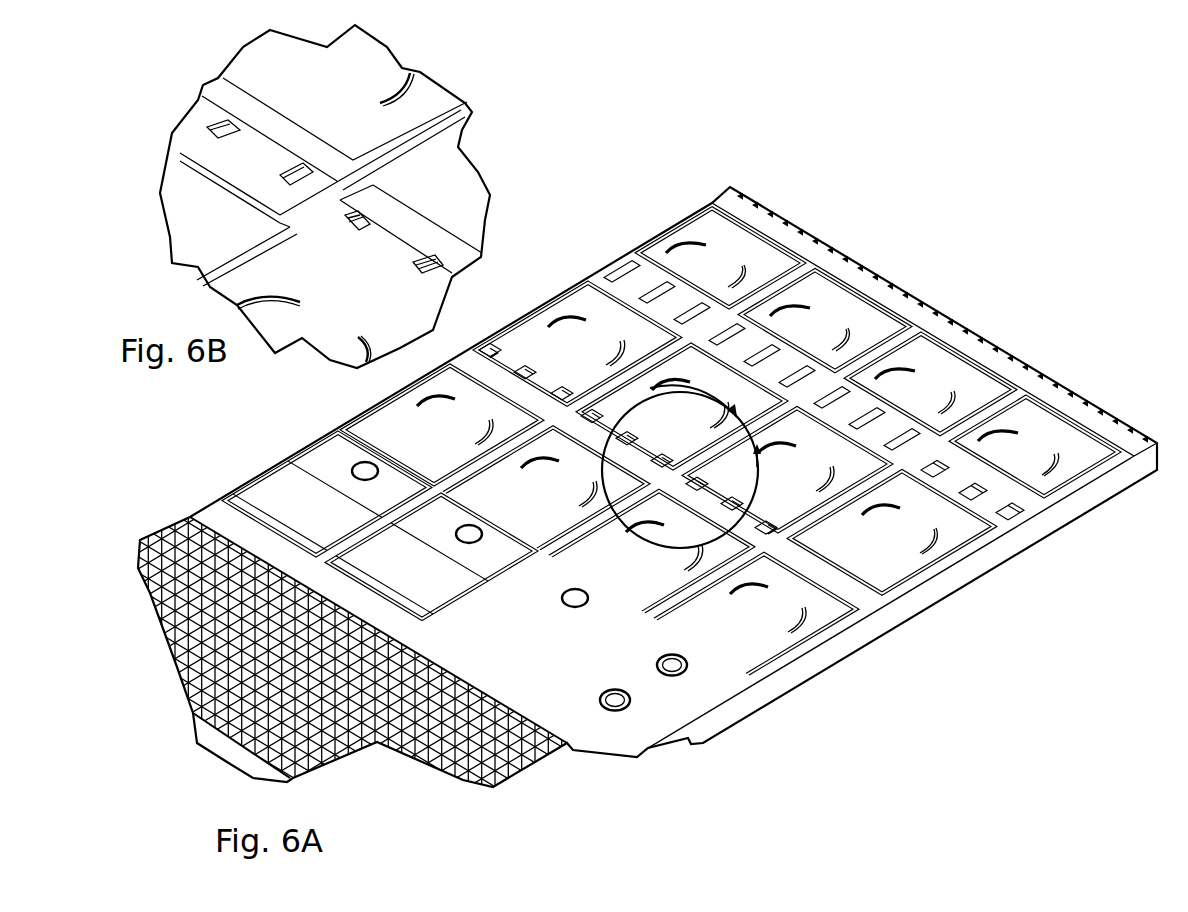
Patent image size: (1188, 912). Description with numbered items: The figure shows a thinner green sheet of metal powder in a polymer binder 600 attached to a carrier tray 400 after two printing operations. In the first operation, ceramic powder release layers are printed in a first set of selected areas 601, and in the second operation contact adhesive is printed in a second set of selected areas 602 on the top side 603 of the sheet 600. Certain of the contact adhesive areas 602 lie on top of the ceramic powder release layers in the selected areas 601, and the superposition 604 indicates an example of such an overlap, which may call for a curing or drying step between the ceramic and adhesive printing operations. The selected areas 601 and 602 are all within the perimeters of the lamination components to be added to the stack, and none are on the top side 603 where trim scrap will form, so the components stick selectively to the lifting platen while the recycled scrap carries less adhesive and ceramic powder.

In FIG. 6A, the green sheet 600 is at (713, 197).
In FIG. 6A, the carrier tray 400 is at (828, 242).
In FIG. 6B, the first set of selected areas 601 is at (200, 90).
In FIG. 6A, the contact adhesive areas 602 is at (280, 467).
In FIG. 6B, the contact adhesive areas 602 is at (203, 130).
In FIG. 6B, the top side 603 is at (190, 146).
In FIG. 6B, the layer superposition 604 is at (348, 216).